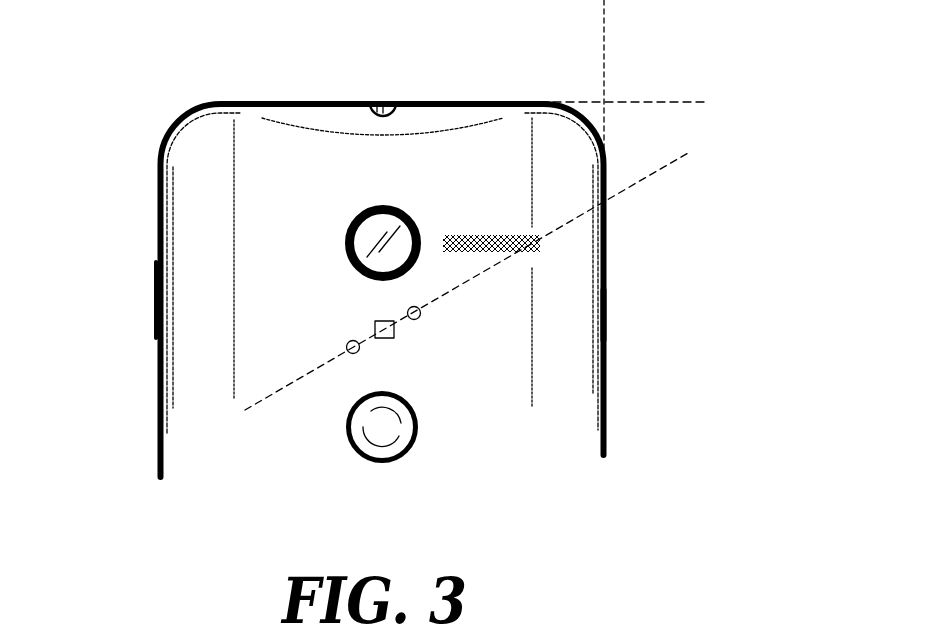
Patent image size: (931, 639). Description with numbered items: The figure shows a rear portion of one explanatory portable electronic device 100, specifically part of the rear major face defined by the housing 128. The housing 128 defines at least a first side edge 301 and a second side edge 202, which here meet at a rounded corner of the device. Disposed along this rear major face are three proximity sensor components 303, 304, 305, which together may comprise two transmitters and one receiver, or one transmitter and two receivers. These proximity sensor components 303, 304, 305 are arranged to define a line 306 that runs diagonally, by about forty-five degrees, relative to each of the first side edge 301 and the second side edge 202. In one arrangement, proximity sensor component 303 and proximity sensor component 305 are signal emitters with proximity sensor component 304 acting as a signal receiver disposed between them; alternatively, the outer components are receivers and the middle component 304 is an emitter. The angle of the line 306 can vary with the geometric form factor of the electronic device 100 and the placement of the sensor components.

The electronic device 100 is at (692, 278).
The housing 128 is at (578, 313).
The second side edge 202 is at (657, 100).
The first side edge 301 is at (604, 53).
The proximity sensor component 303 is at (346, 347).
The proximity sensor component 304 is at (394, 335).
The proximity sensor component 305 is at (421, 312).
The line 306 is at (660, 172).